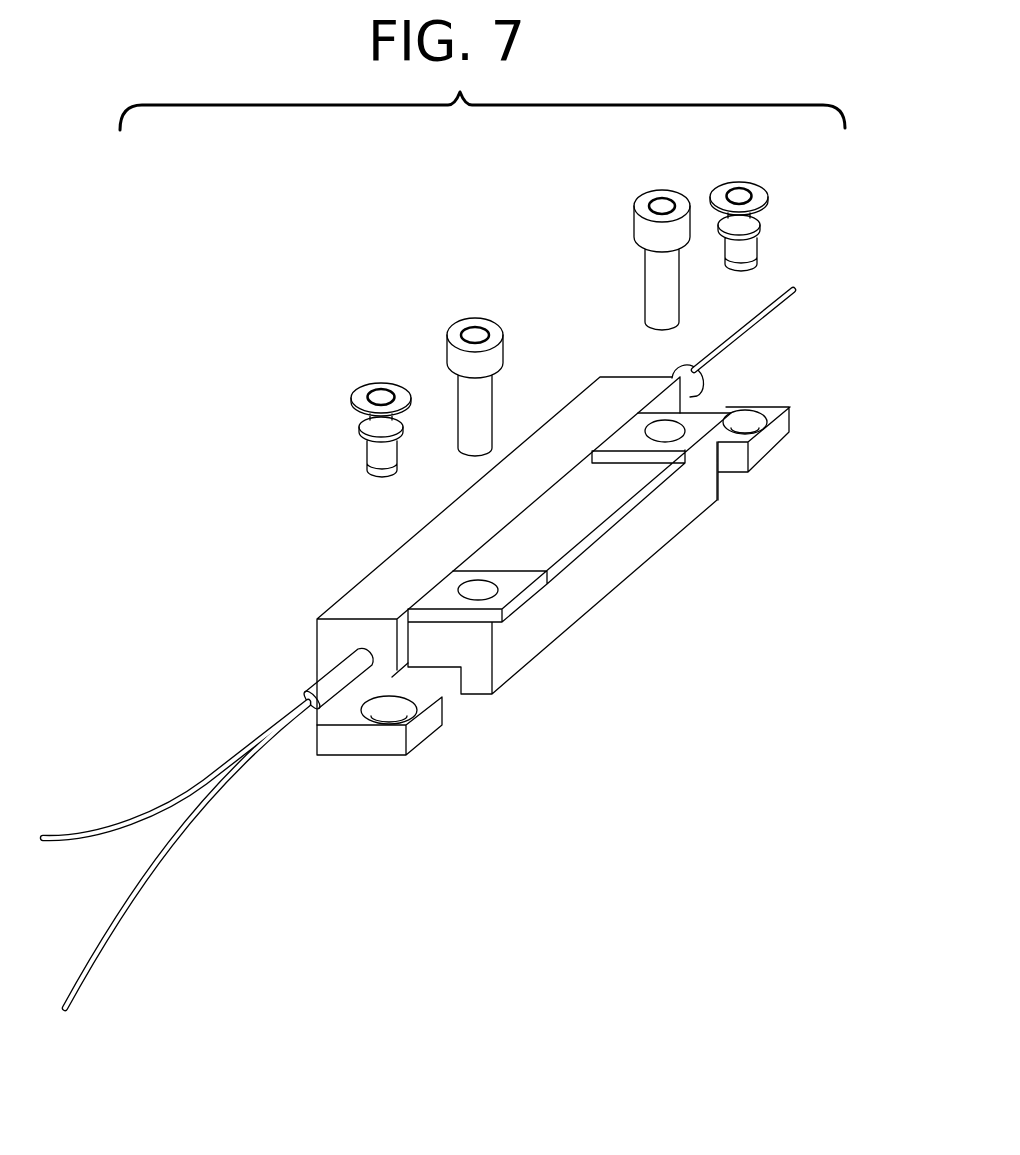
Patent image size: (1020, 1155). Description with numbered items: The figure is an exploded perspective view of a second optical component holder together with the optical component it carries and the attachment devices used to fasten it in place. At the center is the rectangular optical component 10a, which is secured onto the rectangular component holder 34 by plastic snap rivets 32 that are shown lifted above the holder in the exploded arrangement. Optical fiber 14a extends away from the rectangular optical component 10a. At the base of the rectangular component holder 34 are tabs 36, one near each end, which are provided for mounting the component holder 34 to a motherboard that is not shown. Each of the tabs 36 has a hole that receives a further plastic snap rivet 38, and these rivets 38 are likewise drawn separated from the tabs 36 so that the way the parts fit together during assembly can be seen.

The rectangular optical component 10a is at (537, 425).
The optical fiber 14a is at (143, 878).
The plastic snap rivets 32 is at (654, 192).
The rectangular component holder 34 is at (628, 580).
The tabs 36 is at (392, 757).
The plastic snap rivets 38 is at (760, 184).